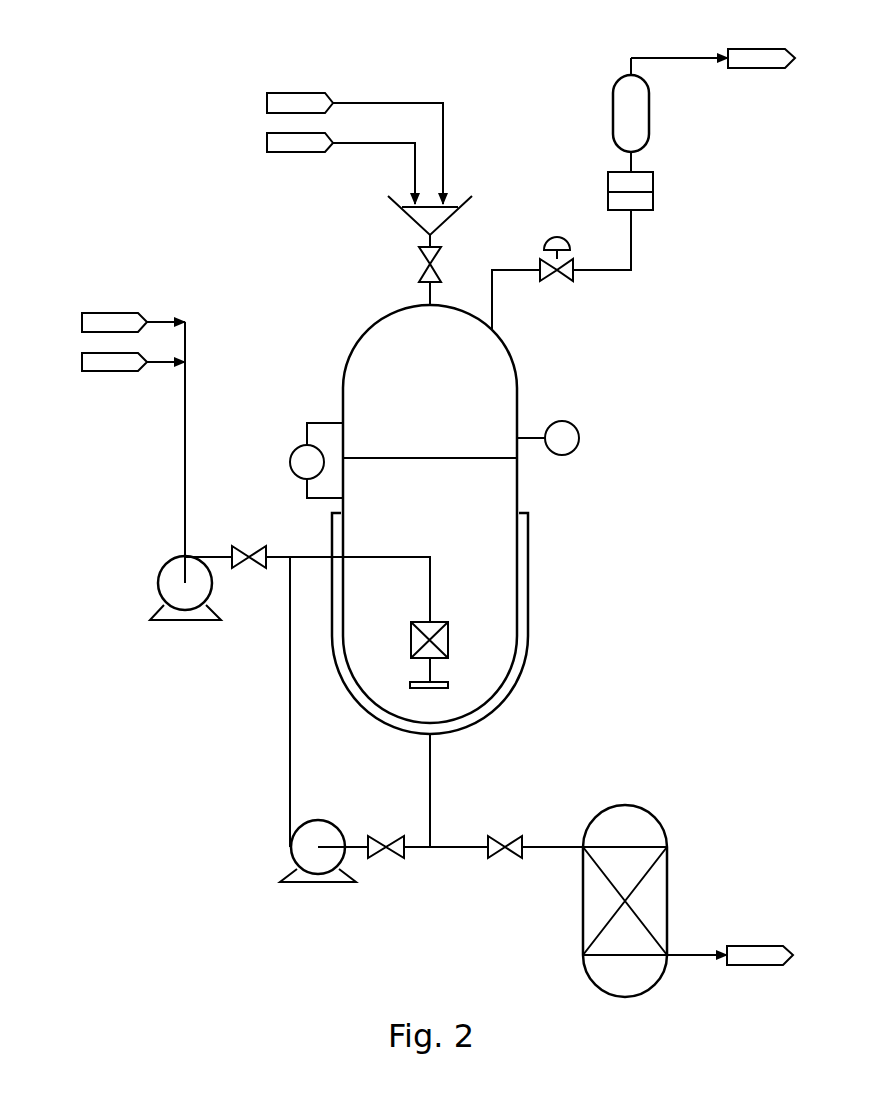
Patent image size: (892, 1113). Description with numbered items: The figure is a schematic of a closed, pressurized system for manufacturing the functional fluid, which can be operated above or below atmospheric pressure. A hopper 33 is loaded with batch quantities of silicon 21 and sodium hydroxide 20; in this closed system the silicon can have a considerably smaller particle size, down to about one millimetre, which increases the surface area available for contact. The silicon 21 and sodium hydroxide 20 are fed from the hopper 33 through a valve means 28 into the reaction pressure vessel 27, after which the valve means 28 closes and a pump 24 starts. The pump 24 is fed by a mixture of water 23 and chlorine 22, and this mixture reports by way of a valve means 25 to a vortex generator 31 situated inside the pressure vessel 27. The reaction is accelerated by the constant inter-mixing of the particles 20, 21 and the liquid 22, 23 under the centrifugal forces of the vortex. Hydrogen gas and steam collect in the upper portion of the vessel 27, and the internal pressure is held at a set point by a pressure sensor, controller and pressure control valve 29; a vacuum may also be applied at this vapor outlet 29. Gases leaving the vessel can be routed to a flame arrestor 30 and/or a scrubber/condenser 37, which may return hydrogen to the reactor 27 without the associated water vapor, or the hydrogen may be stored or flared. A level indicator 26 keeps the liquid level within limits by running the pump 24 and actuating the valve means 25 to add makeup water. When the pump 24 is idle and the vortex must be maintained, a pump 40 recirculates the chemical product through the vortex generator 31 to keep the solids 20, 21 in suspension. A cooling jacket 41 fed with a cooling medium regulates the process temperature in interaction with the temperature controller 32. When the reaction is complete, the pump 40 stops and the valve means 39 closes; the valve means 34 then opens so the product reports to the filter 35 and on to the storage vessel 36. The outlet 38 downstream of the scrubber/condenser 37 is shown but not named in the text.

The sodium hydroxide 20 is at (266, 98).
The silicon 21 is at (266, 143).
The chlorine 22 is at (82, 318).
The water 23 is at (82, 362).
The pump 24 is at (158, 582).
The valve means 25 is at (248, 546).
The level indicator 26 is at (290, 457).
The reaction pressure vessel 27 is at (358, 343).
The valve means 28 is at (420, 256).
The pressure control valve 29 is at (555, 237).
The flame arrestor 30 is at (653, 190).
The vortex generator 31 is at (411, 641).
The temperature controller 32 is at (581, 436).
The hopper 33 is at (402, 214).
The valve means 34 is at (495, 858).
The filter 35 is at (663, 822).
The storage vessel 36 is at (795, 955).
The scrubber/condenser 37 is at (650, 124).
The off-gas outlet stream 38 is at (795, 56).
The valve means 39 is at (376, 858).
The pump 40 is at (291, 843).
The cooling jacket 41 is at (528, 590).